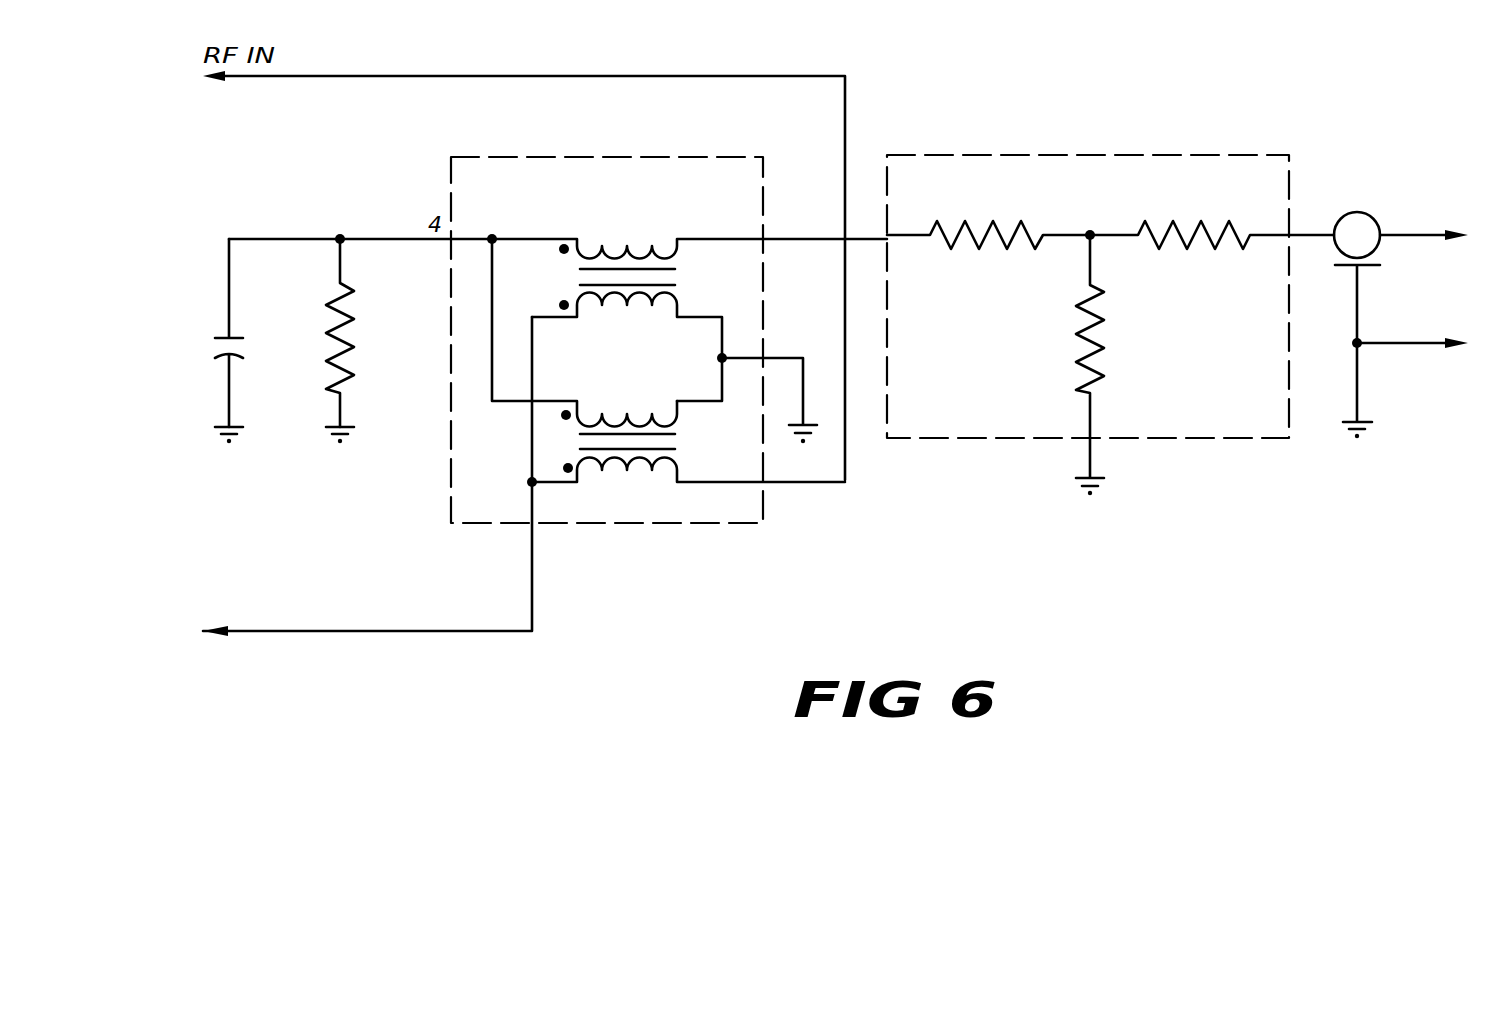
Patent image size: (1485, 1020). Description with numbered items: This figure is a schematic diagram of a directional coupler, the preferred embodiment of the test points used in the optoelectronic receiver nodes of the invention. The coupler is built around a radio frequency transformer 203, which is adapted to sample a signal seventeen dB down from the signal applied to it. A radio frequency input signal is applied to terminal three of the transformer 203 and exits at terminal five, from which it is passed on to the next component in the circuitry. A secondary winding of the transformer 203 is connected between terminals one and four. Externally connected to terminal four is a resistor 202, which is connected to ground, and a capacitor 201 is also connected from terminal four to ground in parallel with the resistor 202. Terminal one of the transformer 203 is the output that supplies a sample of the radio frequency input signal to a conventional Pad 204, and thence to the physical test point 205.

The capacitor 201 is at (229, 335).
The resistor 202 is at (335, 340).
The radio frequency transformer 203 is at (632, 157).
The Pad 204 is at (1080, 155).
The physical test point 205 is at (1365, 213).